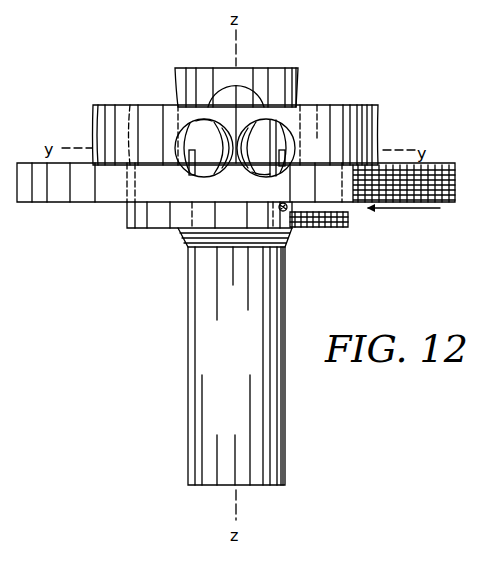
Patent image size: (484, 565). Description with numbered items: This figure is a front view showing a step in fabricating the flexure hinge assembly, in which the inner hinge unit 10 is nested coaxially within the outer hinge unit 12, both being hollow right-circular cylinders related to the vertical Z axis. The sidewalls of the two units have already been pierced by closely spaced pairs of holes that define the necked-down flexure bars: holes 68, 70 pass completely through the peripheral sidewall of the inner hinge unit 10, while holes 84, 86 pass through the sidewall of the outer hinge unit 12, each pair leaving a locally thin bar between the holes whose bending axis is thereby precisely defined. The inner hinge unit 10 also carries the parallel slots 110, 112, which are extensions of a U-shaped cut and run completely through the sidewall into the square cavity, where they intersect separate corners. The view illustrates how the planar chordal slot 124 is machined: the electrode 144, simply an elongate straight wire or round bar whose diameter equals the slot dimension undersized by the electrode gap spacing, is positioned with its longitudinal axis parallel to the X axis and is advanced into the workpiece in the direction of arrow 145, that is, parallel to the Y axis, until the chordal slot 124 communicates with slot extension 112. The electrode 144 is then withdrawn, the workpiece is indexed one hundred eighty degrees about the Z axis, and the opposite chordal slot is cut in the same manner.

The inner hinge unit 10 is at (172, 255).
The outer hinge unit 12 is at (79, 131).
The hole 68 is at (247, 93).
The hole 70 is at (219, 162).
The hole 84 is at (198, 122).
The hole 86 is at (256, 169).
The slot 110 is at (190, 160).
The slot 112 is at (291, 155).
The chordal slot 124 is at (342, 205).
The electrode 144 is at (287, 211).
The arrow 145 is at (403, 210).